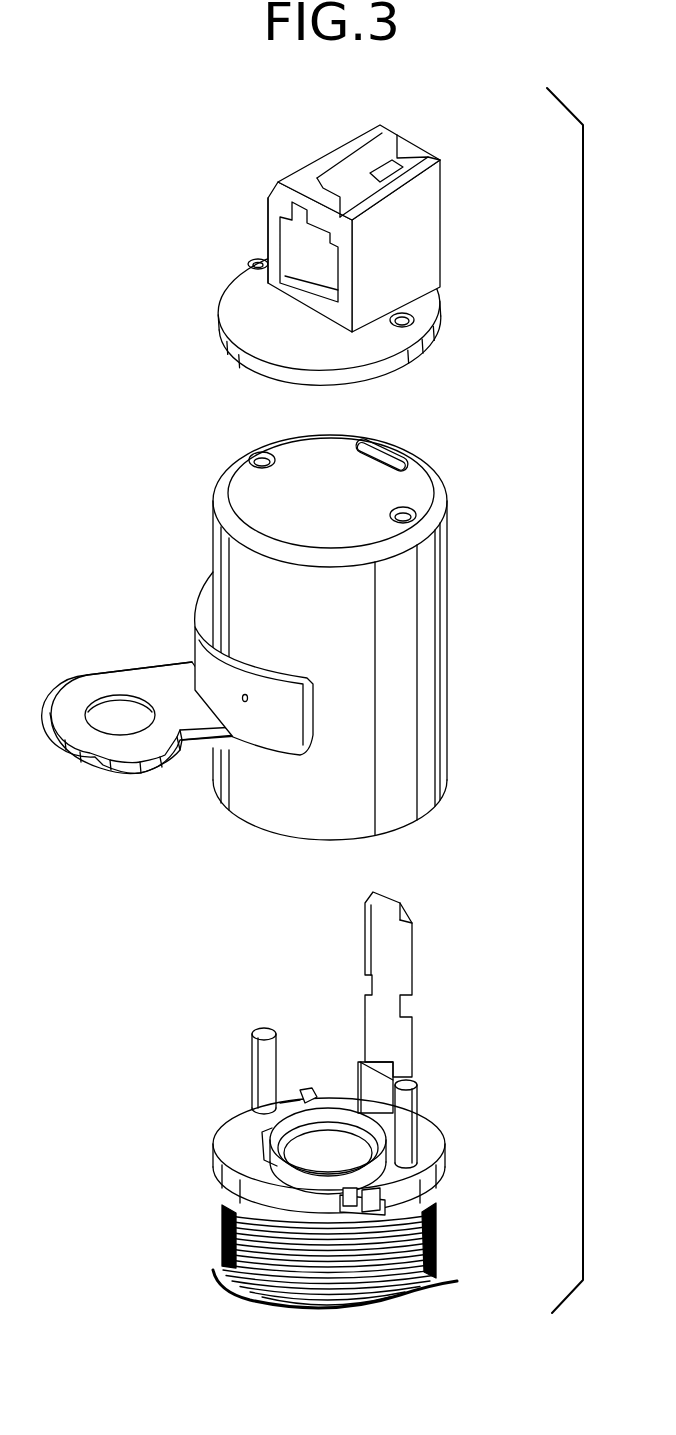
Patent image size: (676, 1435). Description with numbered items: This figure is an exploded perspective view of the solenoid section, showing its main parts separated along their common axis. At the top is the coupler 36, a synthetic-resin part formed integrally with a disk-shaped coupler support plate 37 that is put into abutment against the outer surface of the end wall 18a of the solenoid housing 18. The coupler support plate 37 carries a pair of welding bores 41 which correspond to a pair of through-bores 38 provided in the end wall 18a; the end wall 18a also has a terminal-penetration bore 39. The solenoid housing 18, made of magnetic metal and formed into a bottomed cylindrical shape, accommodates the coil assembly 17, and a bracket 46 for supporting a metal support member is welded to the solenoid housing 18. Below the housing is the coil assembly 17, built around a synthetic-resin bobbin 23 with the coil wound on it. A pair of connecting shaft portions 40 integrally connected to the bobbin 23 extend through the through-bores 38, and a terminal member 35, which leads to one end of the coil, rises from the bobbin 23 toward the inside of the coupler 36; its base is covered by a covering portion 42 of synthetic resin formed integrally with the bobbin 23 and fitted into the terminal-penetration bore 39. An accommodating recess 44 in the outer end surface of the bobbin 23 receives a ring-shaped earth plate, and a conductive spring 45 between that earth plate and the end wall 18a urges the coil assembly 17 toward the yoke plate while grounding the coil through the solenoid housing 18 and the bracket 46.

The coil assembly 17 is at (443, 1231).
The solenoid housing 18 is at (420, 678).
The end wall 18a is at (410, 490).
The bobbin 23 is at (443, 1167).
The terminal member 35 is at (412, 955).
The coupler 36 is at (440, 248).
The coupler support plate 37 is at (253, 321).
The through-bores 38 is at (263, 448).
The terminal-penetration bore 39 is at (393, 447).
The connecting shaft portions 40 is at (267, 1073).
The welding bores 41 is at (258, 257).
The covering portion 42 is at (420, 1085).
The accommodating recess 44 is at (335, 1113).
The spring 45 is at (277, 1140).
The bracket 46 is at (110, 682).